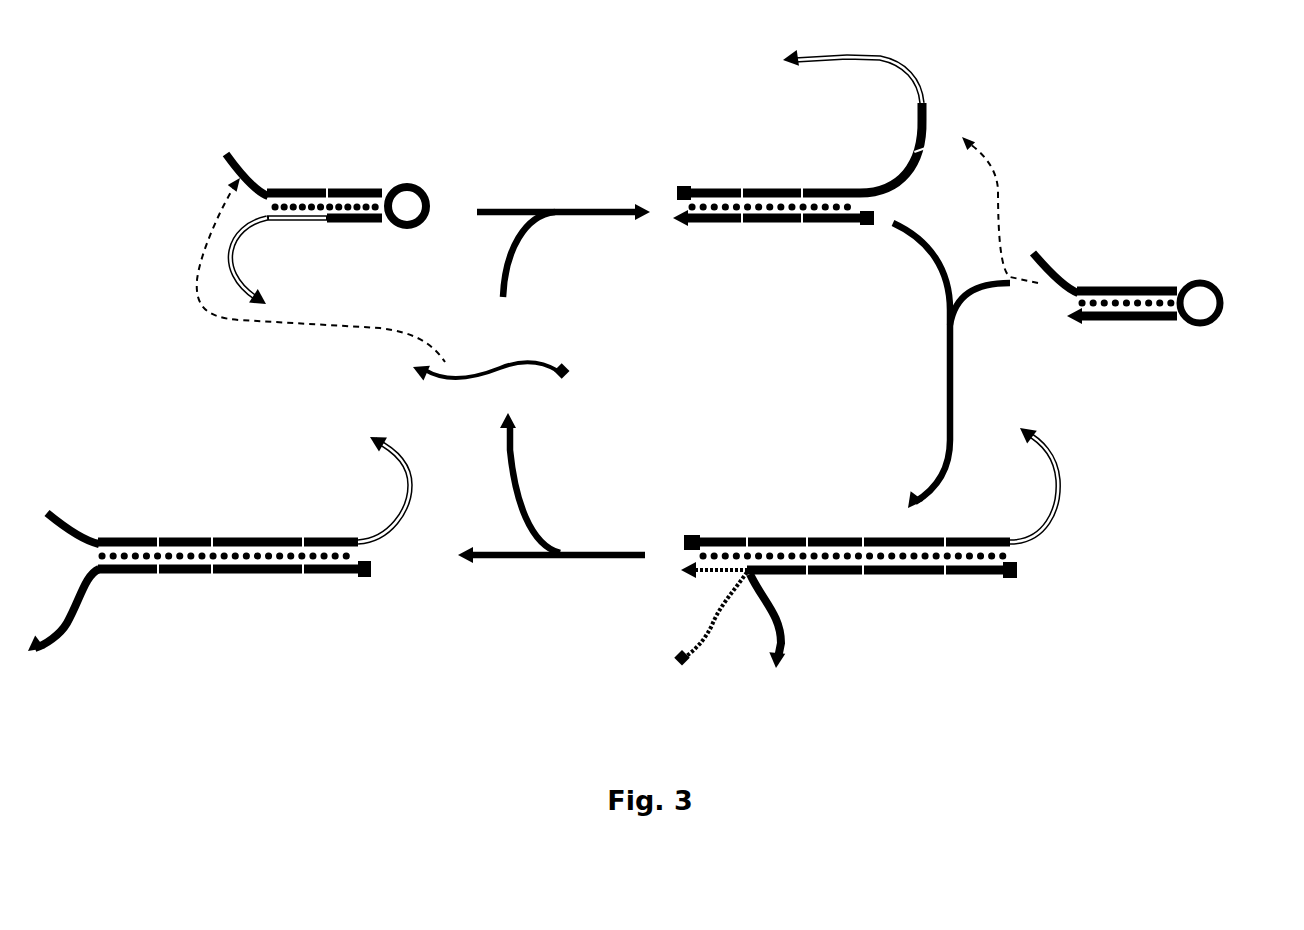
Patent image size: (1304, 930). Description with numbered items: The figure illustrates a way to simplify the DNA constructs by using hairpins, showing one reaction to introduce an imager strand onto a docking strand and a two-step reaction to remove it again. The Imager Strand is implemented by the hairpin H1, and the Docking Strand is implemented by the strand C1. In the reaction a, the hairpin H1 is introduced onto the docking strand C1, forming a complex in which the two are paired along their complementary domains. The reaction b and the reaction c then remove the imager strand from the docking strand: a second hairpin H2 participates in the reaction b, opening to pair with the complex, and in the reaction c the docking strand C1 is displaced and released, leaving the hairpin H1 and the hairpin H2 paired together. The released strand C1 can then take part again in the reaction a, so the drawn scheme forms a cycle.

The hairpin H1 is at (810, 500).
The hairpin H2 is at (233, 609).
The strand C1 is at (668, 630).
The reaction a is at (563, 228).
The reaction b is at (951, 368).
The reaction c is at (551, 516).